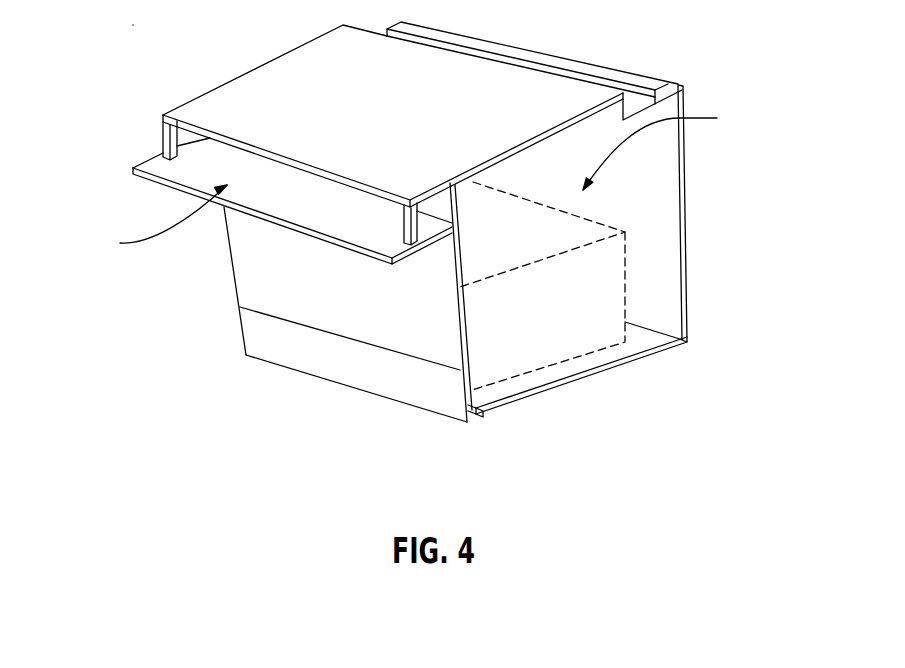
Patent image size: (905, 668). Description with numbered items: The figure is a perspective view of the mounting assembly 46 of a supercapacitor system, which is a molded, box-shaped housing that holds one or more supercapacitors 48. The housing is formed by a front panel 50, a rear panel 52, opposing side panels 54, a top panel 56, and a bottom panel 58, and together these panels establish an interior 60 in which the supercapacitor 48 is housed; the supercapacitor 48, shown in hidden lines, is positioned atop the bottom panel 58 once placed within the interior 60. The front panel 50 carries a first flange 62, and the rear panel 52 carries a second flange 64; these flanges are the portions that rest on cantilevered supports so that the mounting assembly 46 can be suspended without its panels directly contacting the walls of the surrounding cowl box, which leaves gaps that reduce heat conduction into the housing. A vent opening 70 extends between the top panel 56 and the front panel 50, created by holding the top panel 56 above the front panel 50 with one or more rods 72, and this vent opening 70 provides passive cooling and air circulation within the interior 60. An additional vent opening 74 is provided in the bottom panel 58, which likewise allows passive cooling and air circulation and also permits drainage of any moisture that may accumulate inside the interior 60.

The mounting assembly 46 is at (110, 155).
The supercapacitor 48 is at (503, 330).
The front panel 50 is at (310, 283).
The rear panel 52 is at (683, 147).
The opposing side panels 54 is at (230, 260).
The top panel 56 is at (330, 75).
The bottom panel 58 is at (583, 377).
The interior 60 is at (666, 145).
The first flange 62 is at (180, 177).
The second flange 64 is at (603, 82).
The vent opening 70 is at (156, 222).
The rods 72 is at (163, 138).
The additional vent opening 74 is at (477, 418).